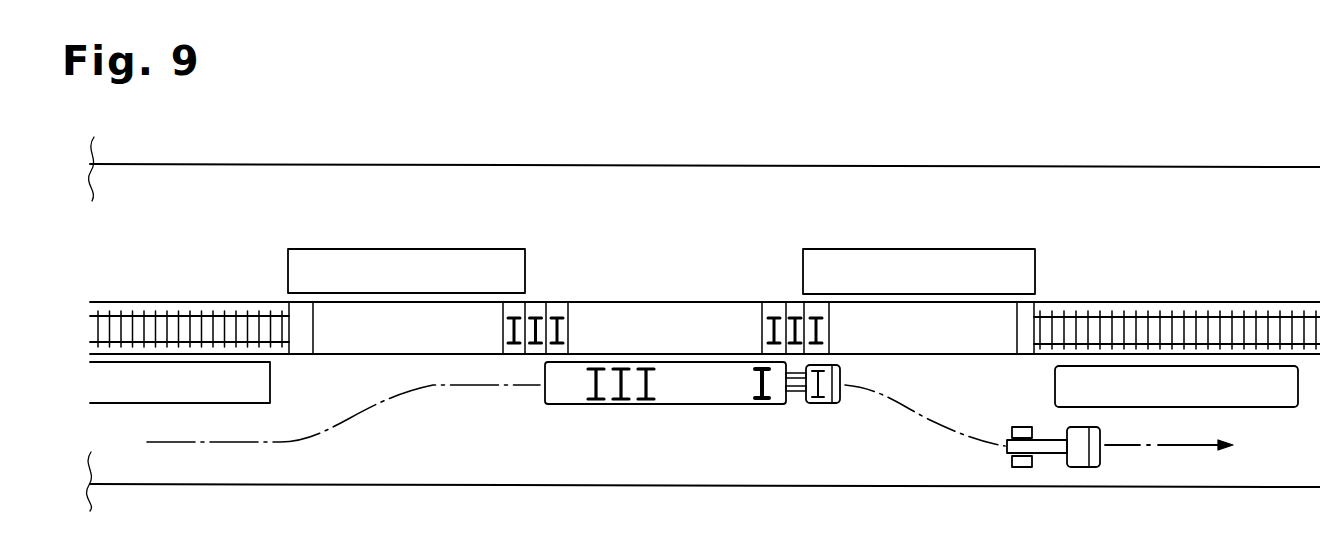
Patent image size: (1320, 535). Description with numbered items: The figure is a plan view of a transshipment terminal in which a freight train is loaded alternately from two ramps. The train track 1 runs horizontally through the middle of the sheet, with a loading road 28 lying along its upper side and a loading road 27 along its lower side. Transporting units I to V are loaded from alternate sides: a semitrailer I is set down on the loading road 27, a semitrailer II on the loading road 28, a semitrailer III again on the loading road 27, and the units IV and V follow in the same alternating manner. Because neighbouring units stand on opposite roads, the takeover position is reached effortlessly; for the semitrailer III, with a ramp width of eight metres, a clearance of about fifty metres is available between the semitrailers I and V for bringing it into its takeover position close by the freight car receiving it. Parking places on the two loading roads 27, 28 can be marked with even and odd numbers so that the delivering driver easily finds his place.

The loading road 28 is at (178, 245).
The loading road 27 is at (892, 459).
The track segment 1 is at (340, 340).
The semitrailer I is at (147, 387).
The semitrailer II is at (407, 260).
The semitrailer III is at (692, 388).
The transporting unit IV is at (910, 267).
The transporting unit V is at (1238, 395).